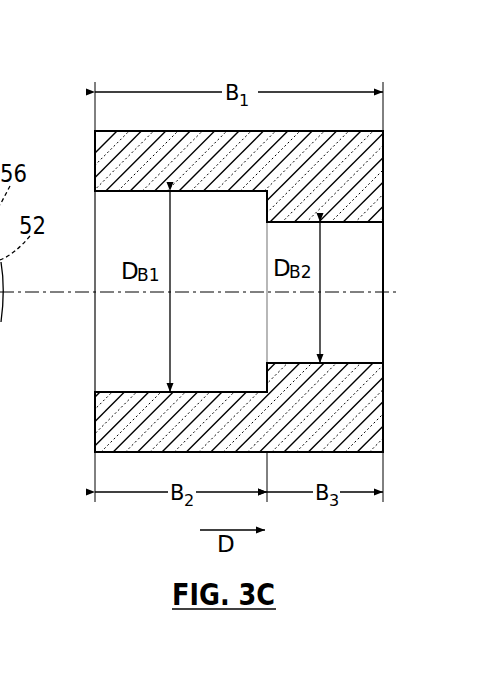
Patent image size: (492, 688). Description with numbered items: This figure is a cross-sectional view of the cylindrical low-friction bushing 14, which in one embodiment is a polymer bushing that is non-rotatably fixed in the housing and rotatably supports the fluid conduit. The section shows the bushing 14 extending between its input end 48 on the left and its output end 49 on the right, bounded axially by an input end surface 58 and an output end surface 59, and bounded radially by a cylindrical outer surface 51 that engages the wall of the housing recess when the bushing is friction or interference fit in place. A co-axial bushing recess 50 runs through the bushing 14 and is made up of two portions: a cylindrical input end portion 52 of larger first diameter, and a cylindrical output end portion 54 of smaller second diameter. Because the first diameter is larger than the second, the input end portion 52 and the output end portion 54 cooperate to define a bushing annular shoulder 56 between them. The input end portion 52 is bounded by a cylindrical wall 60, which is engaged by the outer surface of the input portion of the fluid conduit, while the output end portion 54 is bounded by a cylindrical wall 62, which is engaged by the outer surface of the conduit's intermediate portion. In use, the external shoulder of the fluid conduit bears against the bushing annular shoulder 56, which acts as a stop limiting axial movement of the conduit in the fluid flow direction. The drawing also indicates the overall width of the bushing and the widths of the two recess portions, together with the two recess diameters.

The bushing 14 is at (53, 450).
The input end 48 is at (83, 333).
The output end 49 is at (395, 250).
The bushing recess 50 is at (208, 212).
The cylindrical outer surface 51 is at (143, 130).
The cylindrical input end portion 52 is at (139, 328).
The cylindrical output end portion 54 is at (295, 240).
The bushing annular shoulder 56 is at (267, 369).
The input end surface 58 is at (93, 160).
The output end surface 59 is at (385, 172).
The cylindrical wall 60 is at (115, 192).
The cylindrical wall 62 is at (346, 222).